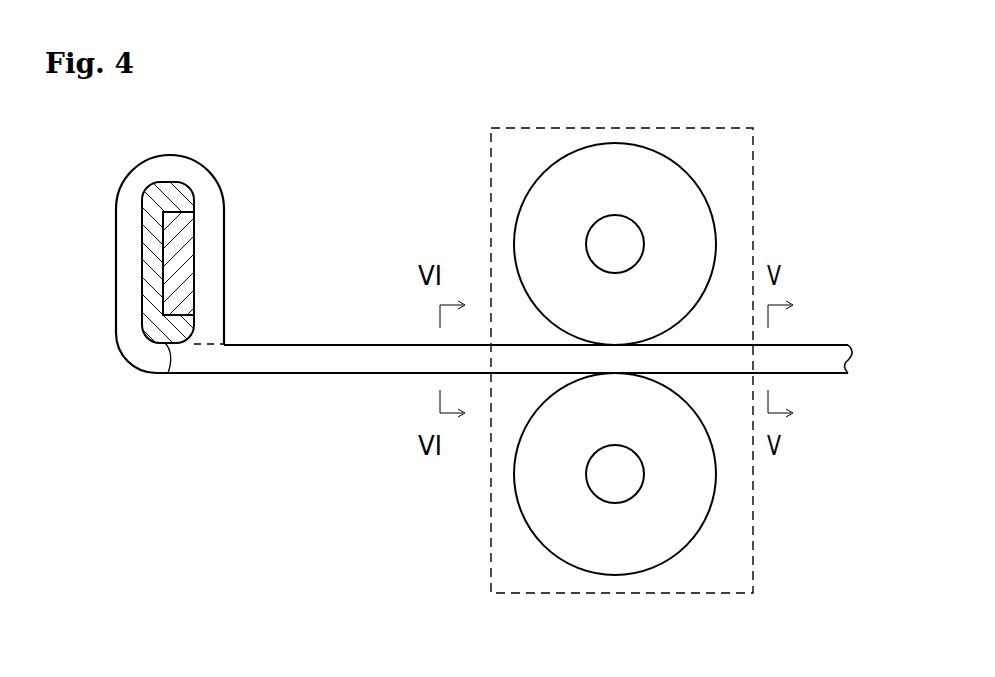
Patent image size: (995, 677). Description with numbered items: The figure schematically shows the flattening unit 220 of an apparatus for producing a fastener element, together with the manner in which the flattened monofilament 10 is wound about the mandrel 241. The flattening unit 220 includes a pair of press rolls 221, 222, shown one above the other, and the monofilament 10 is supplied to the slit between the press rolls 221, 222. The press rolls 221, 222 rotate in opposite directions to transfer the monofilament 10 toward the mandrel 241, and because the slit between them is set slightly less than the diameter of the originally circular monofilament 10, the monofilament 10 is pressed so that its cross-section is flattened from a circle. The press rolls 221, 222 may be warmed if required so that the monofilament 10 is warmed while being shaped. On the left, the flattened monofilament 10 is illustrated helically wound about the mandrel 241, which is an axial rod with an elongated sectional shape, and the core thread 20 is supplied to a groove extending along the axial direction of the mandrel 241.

The monofilament 10 is at (300, 358).
The core thread 20 is at (187, 253).
The mandrel 241 is at (148, 322).
The flattening unit 220 is at (718, 595).
The press roll 221 is at (678, 313).
The press roll 222 is at (678, 540).